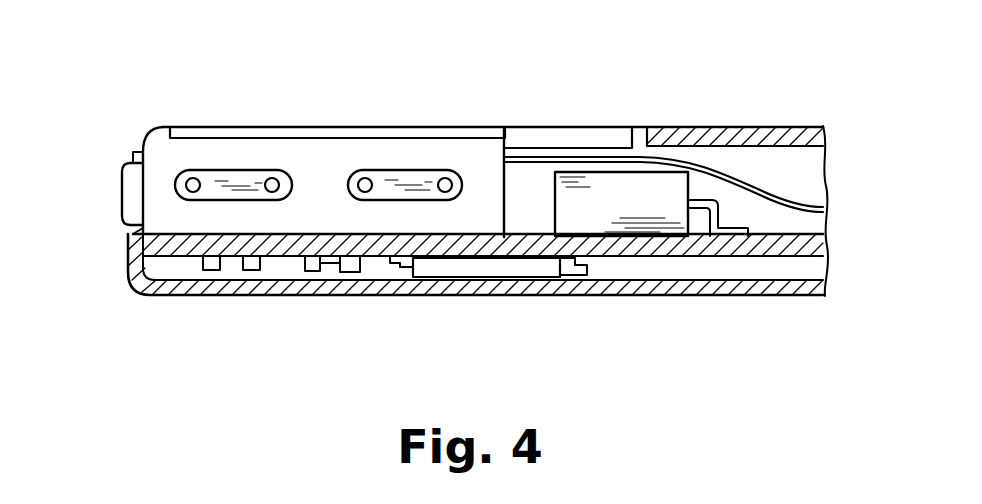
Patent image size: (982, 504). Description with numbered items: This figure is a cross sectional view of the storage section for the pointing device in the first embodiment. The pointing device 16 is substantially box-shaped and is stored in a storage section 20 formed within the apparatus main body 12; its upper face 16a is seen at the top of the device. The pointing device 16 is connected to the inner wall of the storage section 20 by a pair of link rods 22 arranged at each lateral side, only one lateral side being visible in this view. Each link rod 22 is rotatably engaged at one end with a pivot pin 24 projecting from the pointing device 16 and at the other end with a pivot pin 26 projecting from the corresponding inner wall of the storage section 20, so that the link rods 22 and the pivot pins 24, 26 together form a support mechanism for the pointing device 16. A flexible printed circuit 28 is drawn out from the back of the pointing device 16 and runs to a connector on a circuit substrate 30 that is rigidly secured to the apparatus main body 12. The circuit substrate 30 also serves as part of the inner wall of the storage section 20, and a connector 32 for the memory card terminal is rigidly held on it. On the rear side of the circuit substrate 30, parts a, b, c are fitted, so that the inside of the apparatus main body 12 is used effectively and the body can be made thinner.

The apparatus main body 12 is at (160, 301).
The pointing device 16 is at (143, 126).
The cover plate 16a is at (470, 127).
The storage section 20 is at (522, 213).
The link rods 22 is at (250, 199).
The pivot pin 24 is at (193, 177).
The pivot pin 26 is at (271, 177).
The flexible printed circuit 28 is at (752, 172).
The circuit substrate 30 is at (675, 257).
The connector 32 is at (622, 192).
The part a is at (475, 269).
The part b is at (344, 274).
The part c is at (231, 272).